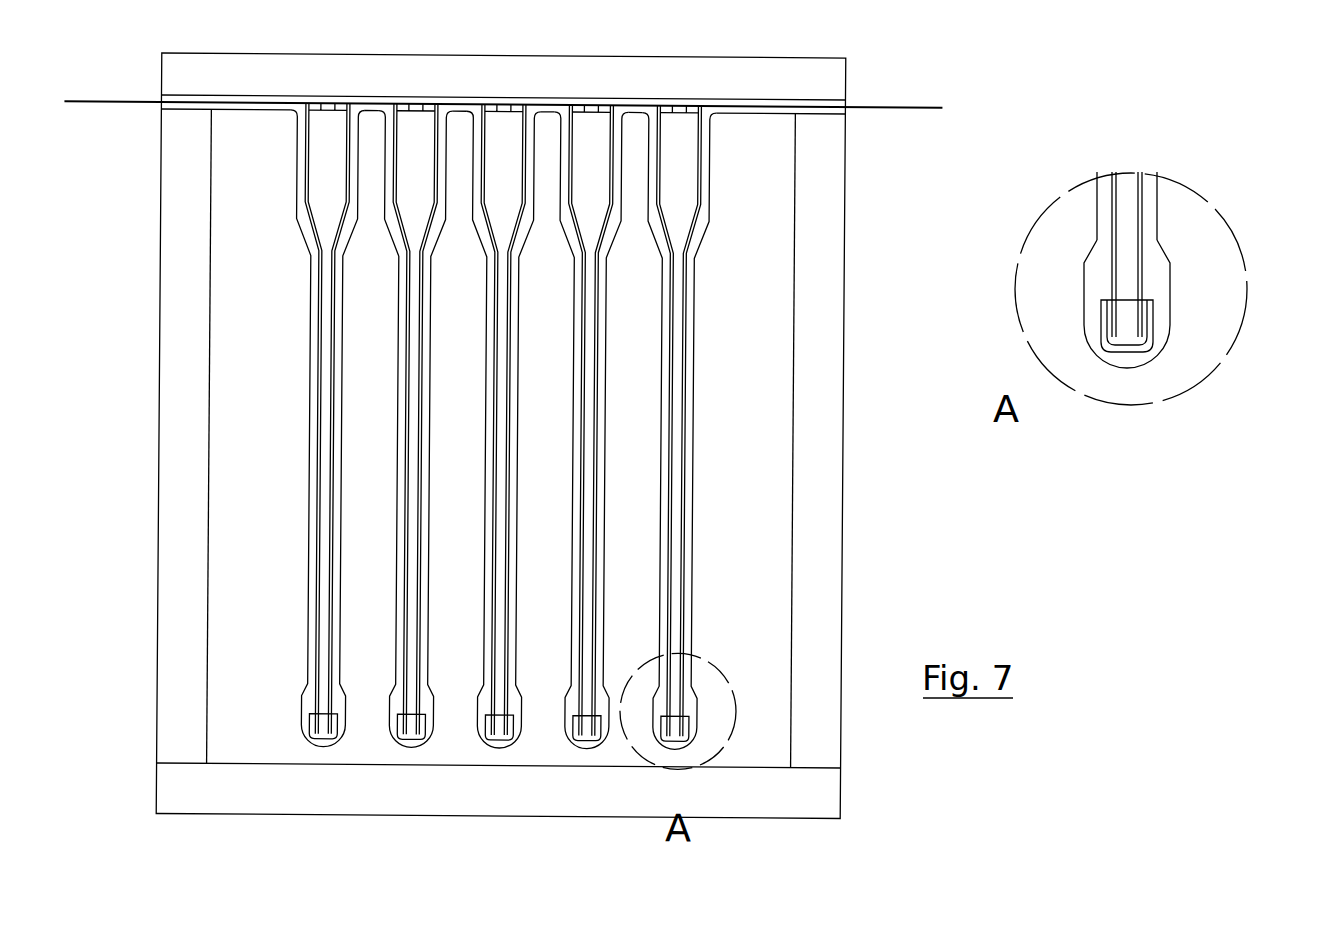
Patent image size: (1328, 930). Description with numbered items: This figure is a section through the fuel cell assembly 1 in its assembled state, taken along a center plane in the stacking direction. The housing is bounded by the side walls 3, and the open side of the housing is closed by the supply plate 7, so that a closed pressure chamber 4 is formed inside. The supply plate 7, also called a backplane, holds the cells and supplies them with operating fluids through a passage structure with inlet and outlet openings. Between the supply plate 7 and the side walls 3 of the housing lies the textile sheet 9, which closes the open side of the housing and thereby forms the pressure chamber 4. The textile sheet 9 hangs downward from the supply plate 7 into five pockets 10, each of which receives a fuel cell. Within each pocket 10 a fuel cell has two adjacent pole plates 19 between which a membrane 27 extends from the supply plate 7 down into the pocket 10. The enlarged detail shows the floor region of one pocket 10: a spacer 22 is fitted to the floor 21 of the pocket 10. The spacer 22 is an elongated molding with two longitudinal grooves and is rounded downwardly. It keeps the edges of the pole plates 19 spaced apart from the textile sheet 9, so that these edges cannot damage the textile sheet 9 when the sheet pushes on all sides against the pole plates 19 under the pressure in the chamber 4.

The fuel cell assembly 1 is at (1066, 51).
The side walls 3 is at (825, 540).
The pressure chamber 4 is at (762, 568).
The supply plate 7 is at (822, 78).
The textile sheet 9 is at (688, 432).
The pocket 10 is at (700, 344).
The pole plate 19 is at (1110, 275).
The floor of the pocket 21 is at (1105, 338).
The spacer 22 is at (1127, 338).
The membrane 27 is at (1258, 262).